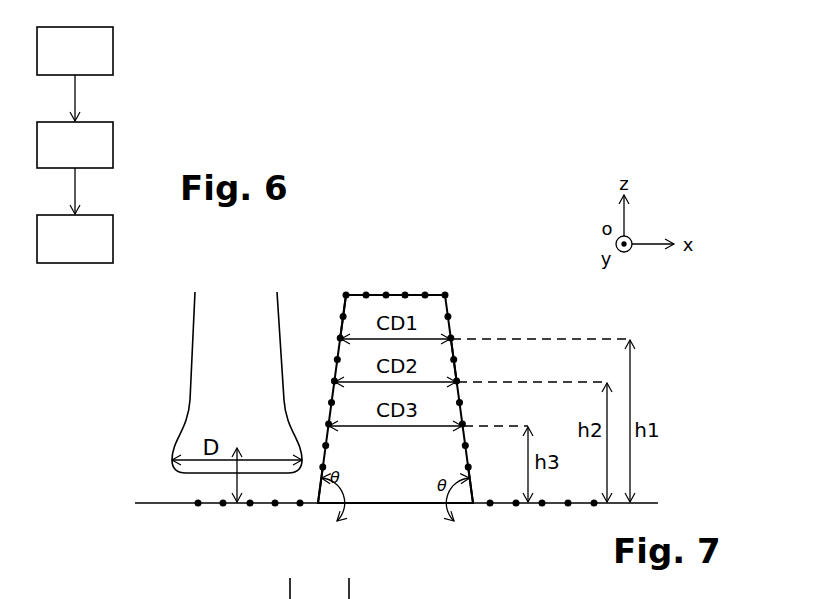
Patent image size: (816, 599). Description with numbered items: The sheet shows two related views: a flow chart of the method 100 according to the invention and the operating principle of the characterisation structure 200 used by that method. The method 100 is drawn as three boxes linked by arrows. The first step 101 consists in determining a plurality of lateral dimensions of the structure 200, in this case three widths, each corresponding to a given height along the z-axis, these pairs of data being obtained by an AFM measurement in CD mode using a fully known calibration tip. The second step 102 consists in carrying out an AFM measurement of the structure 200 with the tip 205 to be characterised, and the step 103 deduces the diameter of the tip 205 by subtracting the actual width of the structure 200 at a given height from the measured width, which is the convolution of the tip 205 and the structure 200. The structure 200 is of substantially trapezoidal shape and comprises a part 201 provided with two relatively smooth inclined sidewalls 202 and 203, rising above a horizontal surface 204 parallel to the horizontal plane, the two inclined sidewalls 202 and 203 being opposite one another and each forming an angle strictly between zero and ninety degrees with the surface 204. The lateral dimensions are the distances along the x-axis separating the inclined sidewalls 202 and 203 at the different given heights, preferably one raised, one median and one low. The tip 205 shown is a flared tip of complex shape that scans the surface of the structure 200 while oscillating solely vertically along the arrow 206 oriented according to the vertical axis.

In FIG. 6, the method 100 is at (148, 118).
In FIG. 6, the first step 101 is at (75, 51).
In FIG. 6, the second step 102 is at (75, 145).
In FIG. 6, the step 103 is at (75, 239).
In FIG. 7, the characterisation structure 200 is at (465, 305).
In FIG. 7, the part 201 is at (465, 457).
In FIG. 7, the inclined sidewall 202 is at (458, 376).
In FIG. 7, the inclined sidewall 203 is at (336, 352).
In FIG. 7, the surface 204 is at (556, 505).
In FIG. 7, the tip 205 is at (210, 347).
In FIG. 7, the arrow 206 is at (240, 466).